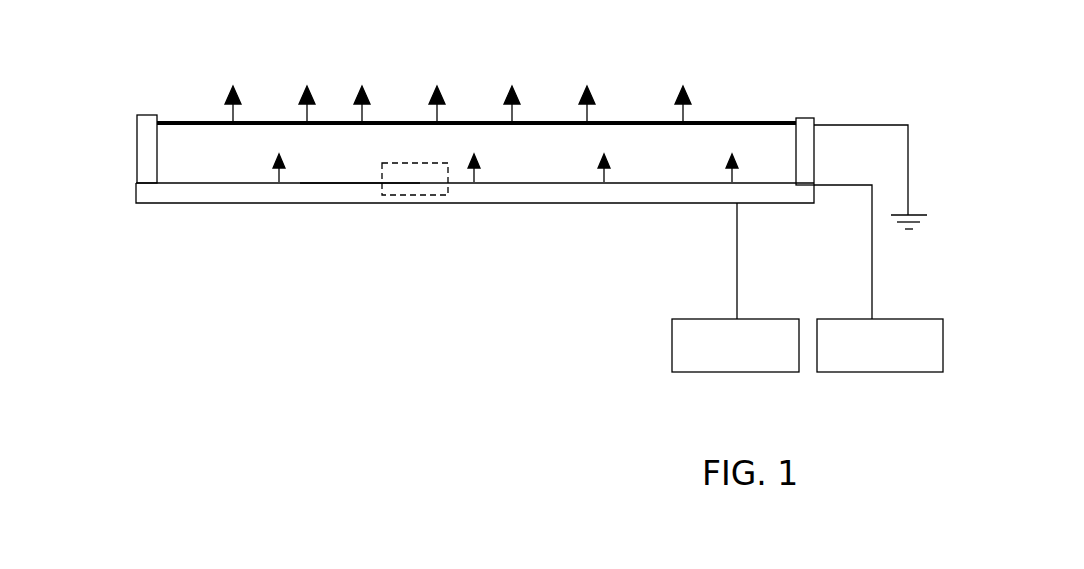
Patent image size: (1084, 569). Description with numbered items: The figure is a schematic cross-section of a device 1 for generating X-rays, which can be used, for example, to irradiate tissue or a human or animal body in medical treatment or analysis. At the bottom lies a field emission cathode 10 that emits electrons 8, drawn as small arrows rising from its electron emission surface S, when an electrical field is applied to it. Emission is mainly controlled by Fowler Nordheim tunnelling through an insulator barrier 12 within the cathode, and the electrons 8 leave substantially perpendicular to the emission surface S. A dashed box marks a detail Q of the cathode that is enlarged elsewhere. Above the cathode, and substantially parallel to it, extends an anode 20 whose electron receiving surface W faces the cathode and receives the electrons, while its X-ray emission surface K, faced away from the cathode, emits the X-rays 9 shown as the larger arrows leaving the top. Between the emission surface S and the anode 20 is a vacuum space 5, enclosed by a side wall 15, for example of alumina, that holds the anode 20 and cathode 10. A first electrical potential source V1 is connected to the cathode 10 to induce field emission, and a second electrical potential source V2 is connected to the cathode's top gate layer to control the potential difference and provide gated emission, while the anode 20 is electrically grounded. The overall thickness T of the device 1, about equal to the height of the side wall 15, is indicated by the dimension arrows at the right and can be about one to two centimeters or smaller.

The device 1 is at (120, 102).
The anode 20 is at (173, 120).
The side wall 15 is at (147, 158).
The field emission cathode 10 is at (213, 183).
The insulator barrier 12 is at (262, 192).
The detail Q is at (403, 195).
The electron emission surface S is at (360, 104).
The vacuum space 5 is at (536, 166).
The X-rays 9 is at (458, 73).
The electrons 8 is at (505, 223).
The electron receiving surface W is at (630, 127).
The X-ray emission surface K is at (728, 122).
The thickness T is at (832, 70).
The first electrical potential source V1 is at (752, 353).
The second electrical potential source V2 is at (897, 353).